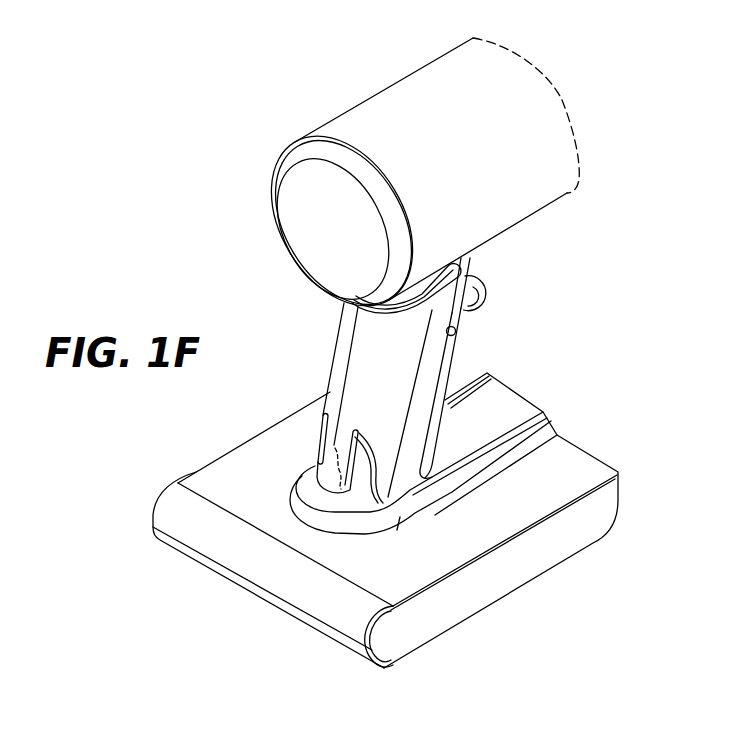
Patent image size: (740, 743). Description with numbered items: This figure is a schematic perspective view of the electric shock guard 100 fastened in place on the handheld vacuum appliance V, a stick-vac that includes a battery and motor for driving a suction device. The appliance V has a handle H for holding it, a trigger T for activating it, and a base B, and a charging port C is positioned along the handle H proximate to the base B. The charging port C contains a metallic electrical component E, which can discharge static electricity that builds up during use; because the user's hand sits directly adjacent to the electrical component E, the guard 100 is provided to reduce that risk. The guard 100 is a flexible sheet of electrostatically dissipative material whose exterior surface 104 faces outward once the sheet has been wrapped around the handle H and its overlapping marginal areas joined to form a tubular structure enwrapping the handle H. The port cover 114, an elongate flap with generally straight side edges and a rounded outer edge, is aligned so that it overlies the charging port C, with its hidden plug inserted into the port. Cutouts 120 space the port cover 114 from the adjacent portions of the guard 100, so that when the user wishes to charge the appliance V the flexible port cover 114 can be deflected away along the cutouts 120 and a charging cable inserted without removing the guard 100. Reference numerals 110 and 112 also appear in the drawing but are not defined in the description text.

The electric shock guard 100 is at (308, 318).
The second surface 104 is at (393, 386).
The mounting bracket 110 is at (427, 305).
The column side portion 112 is at (411, 496).
The port cover 114 is at (328, 460).
The cutouts 120 is at (357, 496).
The handheld vacuum appliance V is at (596, 80).
The trigger T is at (472, 293).
The base B is at (431, 563).
The handle H is at (365, 491).
The charging port C is at (316, 474).
The metallic electrical component E is at (333, 459).